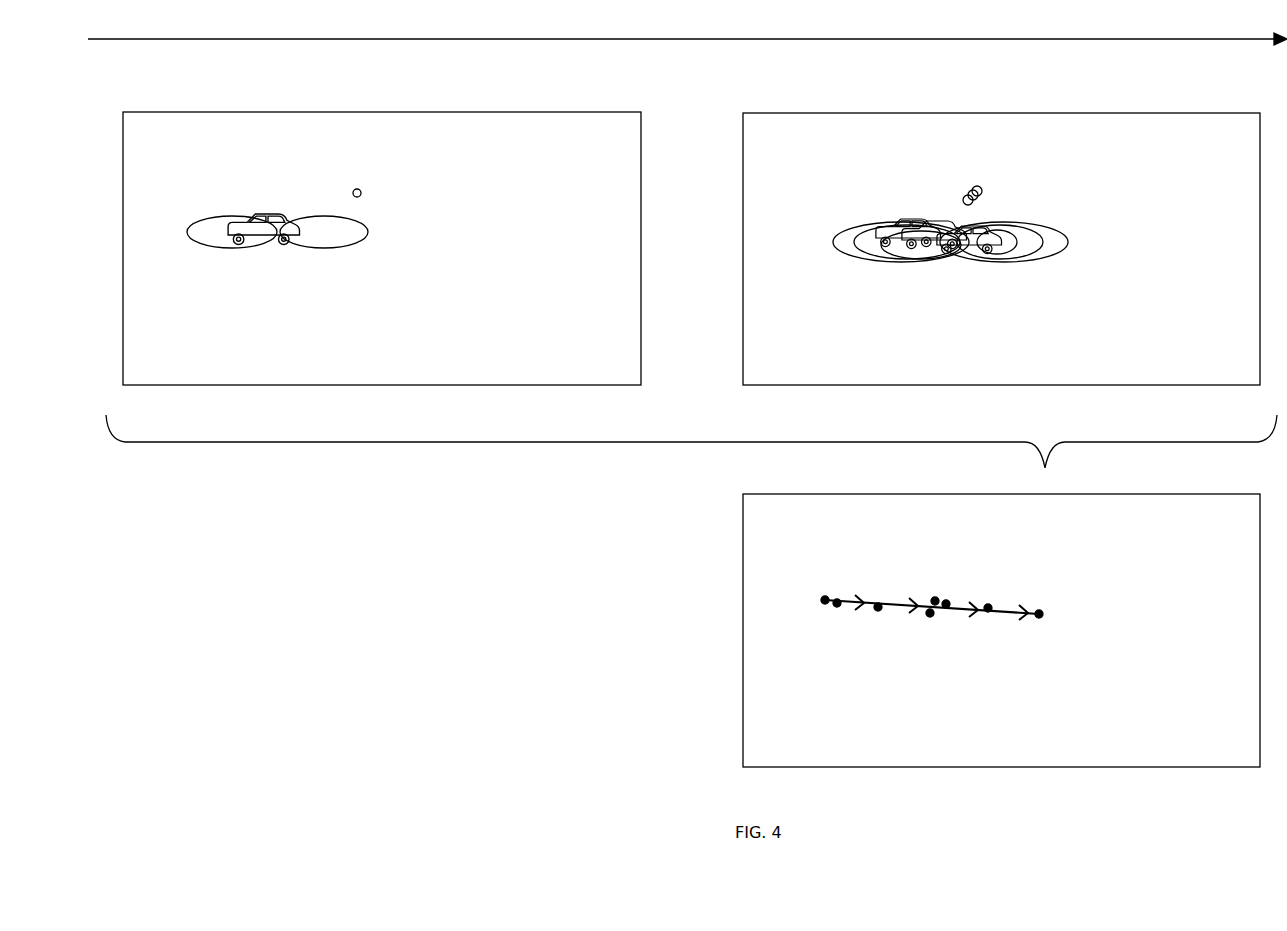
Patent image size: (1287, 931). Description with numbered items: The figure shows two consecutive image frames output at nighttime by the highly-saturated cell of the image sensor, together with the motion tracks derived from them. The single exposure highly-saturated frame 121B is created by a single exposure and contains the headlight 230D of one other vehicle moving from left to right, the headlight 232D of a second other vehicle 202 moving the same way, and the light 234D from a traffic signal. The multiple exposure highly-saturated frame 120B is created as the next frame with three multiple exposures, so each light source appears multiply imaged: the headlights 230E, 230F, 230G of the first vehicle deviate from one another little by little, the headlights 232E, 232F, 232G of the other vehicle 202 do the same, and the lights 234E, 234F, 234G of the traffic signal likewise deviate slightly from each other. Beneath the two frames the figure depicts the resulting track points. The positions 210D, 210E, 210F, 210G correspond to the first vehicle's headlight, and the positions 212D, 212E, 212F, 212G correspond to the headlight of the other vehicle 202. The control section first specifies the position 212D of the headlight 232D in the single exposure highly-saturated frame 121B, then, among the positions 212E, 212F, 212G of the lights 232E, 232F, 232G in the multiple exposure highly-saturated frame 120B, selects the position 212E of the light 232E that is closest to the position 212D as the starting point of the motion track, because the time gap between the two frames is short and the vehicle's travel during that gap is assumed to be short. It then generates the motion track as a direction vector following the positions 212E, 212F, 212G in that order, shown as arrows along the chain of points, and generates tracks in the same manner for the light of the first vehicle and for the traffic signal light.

The single exposure highly-saturated frame 121B is at (178, 112).
The multiple exposure highly-saturated frame 120B is at (809, 112).
The other vehicle 202 is at (273, 227).
The headlight 230D is at (198, 245).
The headlight 230E is at (847, 250).
The headlight 230F is at (877, 253).
The headlight 230G is at (910, 258).
The headlight 232D is at (315, 247).
The headlight 232E is at (963, 257).
The headlight 232F is at (987, 257).
The headlight 232G is at (1020, 262).
The light from traffic signal 234D is at (361, 189).
The light from traffic signal 234E is at (978, 185).
The light from traffic signal 234F is at (972, 188).
The light from traffic signal 234G is at (965, 192).
The first position point 210D is at (825, 596).
The first position point 210E is at (837, 599).
The first position point 210F is at (879, 603).
The first position point 210G is at (928, 617).
The position of light 212D is at (937, 597).
The starting point position 212E is at (948, 600).
The position of light 212F is at (990, 604).
The position of light 212G is at (1043, 612).